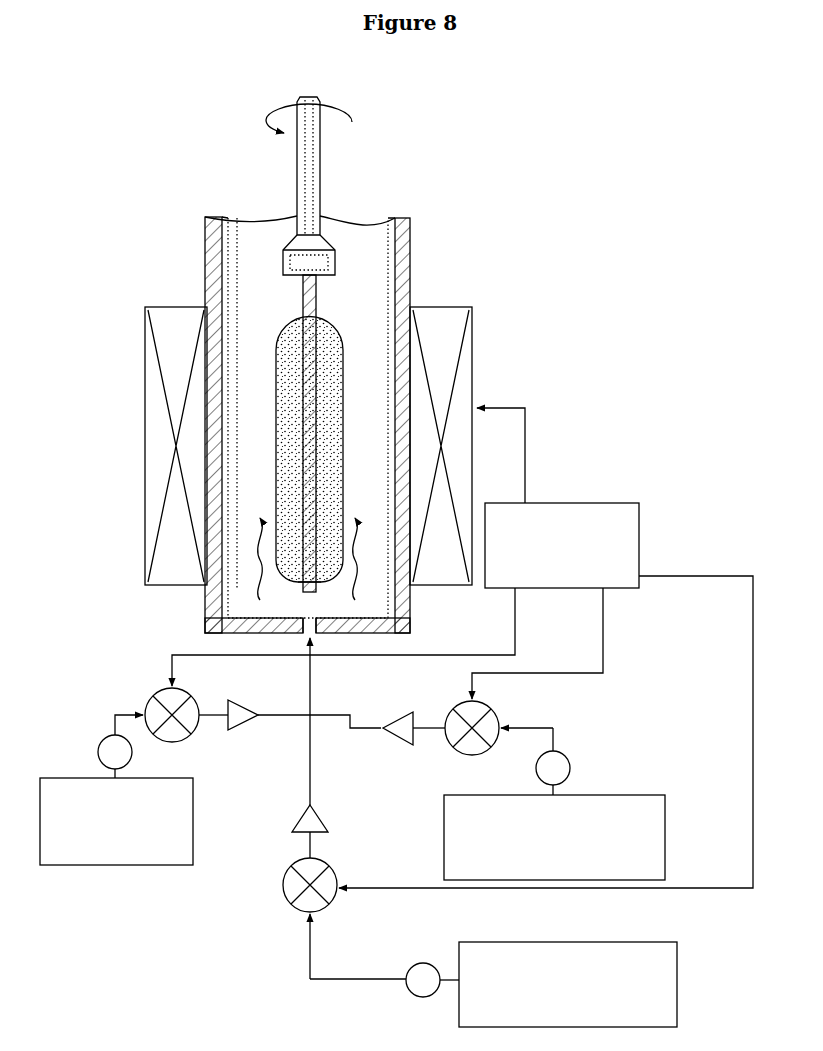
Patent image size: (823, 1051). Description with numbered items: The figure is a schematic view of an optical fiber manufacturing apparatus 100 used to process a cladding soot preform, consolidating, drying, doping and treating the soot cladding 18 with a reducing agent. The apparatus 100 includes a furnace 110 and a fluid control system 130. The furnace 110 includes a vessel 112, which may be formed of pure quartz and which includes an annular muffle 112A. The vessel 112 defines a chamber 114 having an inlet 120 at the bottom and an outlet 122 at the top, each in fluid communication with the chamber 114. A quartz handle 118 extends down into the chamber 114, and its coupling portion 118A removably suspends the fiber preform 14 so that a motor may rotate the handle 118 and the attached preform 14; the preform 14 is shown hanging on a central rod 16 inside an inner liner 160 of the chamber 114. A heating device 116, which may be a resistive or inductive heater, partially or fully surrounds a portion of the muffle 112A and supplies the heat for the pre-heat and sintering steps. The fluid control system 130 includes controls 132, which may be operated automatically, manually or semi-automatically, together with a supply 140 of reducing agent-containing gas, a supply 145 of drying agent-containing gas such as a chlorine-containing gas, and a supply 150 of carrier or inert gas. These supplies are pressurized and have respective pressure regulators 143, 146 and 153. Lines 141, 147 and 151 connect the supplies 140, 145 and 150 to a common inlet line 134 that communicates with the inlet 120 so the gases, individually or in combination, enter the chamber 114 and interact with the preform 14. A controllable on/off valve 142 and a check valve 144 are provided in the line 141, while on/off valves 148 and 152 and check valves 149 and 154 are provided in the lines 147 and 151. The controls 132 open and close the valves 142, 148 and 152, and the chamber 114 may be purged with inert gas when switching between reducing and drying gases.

The cladding soot preform processing apparatus 100 is at (160, 194).
The quartz handle 118 is at (325, 131).
The coupling portion 118A is at (337, 262).
The outlet 122 is at (268, 206).
The chamber 114 is at (256, 244).
The annular muffle 112A is at (205, 253).
The vessel 112 is at (192, 275).
The inner sleeve 160 is at (262, 318).
The fiber preform 14 is at (352, 338).
The support rod 16 is at (310, 388).
The soot cladding 18 is at (283, 565).
The furnace 110 is at (138, 400).
The heating device 116 is at (145, 483).
The inlet 120 is at (298, 630).
The controls 132 is at (640, 547).
The fluid control system 130 is at (624, 632).
The common inlet line 134 is at (312, 677).
The line 151 is at (108, 712).
The pressure regulator 153 is at (98, 750).
The controllable on/off valve 152 is at (190, 737).
The check valve 154 is at (243, 714).
The supply of carrier or inert gas 150 is at (115, 866).
The controllable on/off valve 142 is at (482, 703).
The line 141 is at (560, 740).
The pressure regulator 143 is at (571, 768).
The check valve 144 is at (396, 744).
The supply of reducing agent-containing gas 140 is at (666, 808).
The check valve 149 is at (322, 812).
The controllable on/off valve 148 is at (335, 866).
The line 147 is at (307, 963).
The pressure regulator 146 is at (405, 981).
The supply of drying agent-containing gas 145 is at (678, 950).